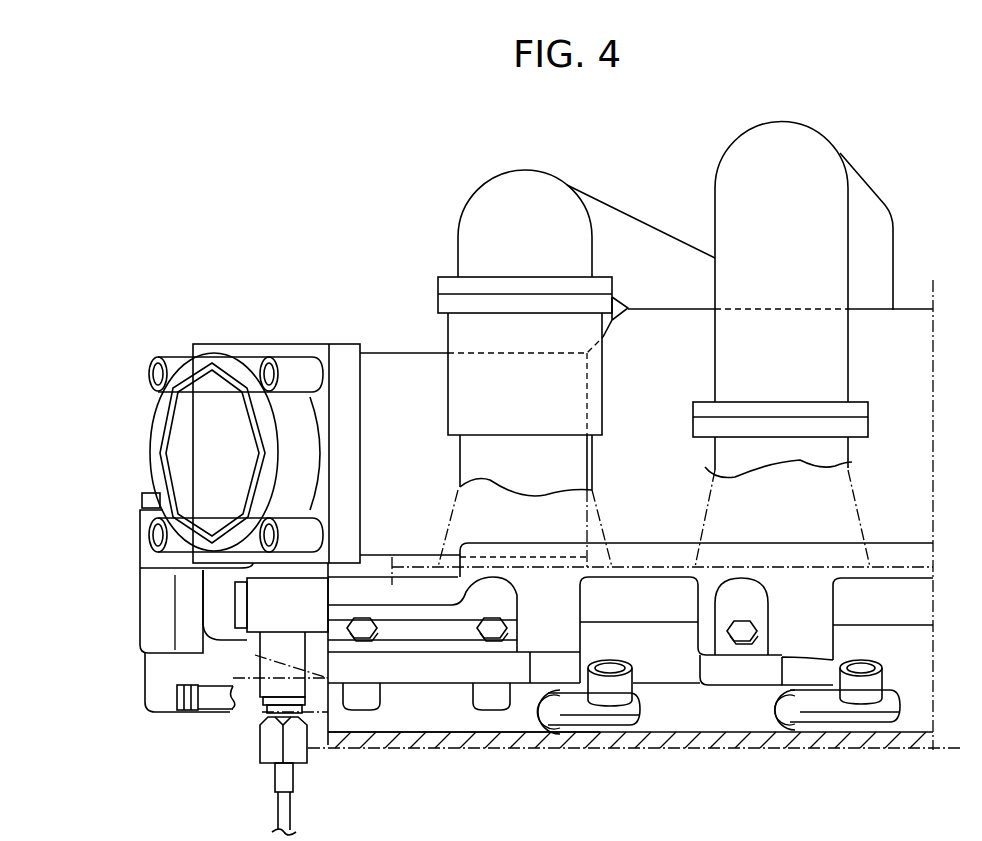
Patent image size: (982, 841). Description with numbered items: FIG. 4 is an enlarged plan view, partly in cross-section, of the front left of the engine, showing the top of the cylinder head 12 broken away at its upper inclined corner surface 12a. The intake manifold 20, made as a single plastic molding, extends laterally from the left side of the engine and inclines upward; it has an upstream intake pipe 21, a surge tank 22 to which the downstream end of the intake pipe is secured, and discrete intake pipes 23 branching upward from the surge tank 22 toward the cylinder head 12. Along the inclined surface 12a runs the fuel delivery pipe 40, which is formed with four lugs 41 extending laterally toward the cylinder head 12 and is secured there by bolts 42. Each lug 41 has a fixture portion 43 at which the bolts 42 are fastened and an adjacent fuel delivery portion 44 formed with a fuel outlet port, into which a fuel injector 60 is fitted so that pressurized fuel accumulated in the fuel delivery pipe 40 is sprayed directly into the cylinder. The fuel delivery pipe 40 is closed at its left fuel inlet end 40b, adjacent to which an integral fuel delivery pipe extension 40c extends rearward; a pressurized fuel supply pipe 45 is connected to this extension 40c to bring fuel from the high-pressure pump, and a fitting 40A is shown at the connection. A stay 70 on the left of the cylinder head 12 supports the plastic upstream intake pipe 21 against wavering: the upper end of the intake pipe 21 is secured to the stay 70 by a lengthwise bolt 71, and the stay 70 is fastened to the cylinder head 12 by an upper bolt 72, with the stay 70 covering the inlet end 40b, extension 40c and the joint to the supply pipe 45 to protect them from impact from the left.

The cylinder head 12 is at (398, 742).
The upper inclined corner surface 12a is at (465, 722).
The intake manifold 20 is at (450, 262).
The upstream intake pipe 21 is at (390, 365).
The surge tank 22 is at (905, 318).
The discrete intake pipes 23 is at (567, 185).
The fuel delivery pipe 40 is at (635, 543).
The fuel inlet fitting 40A is at (262, 715).
The fuel inlet end 40b is at (250, 618).
The fuel delivery pipe extension 40c is at (265, 675).
The lug 41 is at (448, 685).
The bolt 42 is at (362, 618).
The fixture portion 43 is at (457, 580).
The fuel delivery portion 44 is at (555, 660).
The pressurized fuel supply pipe 45 is at (292, 800).
The fuel injector 60 is at (573, 722).
The stay 70 is at (135, 603).
The bolt 71 is at (143, 493).
The upper bolt 72 is at (183, 713).